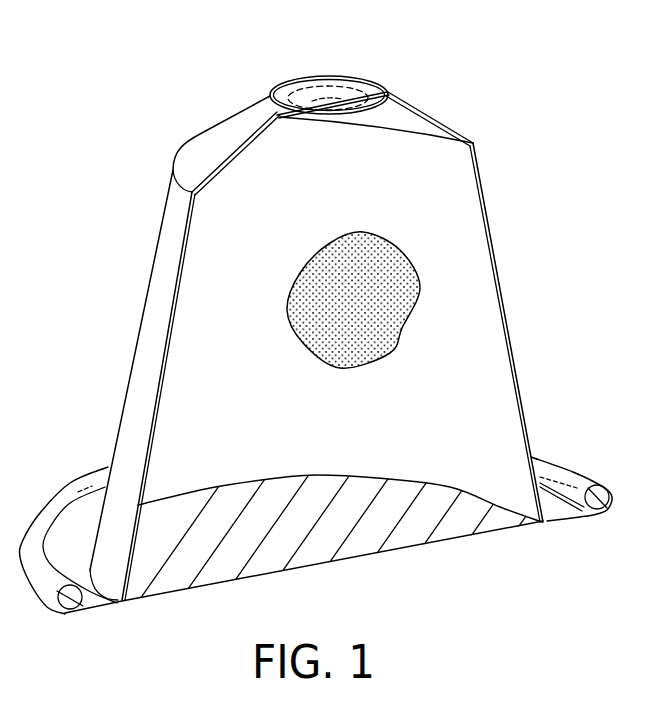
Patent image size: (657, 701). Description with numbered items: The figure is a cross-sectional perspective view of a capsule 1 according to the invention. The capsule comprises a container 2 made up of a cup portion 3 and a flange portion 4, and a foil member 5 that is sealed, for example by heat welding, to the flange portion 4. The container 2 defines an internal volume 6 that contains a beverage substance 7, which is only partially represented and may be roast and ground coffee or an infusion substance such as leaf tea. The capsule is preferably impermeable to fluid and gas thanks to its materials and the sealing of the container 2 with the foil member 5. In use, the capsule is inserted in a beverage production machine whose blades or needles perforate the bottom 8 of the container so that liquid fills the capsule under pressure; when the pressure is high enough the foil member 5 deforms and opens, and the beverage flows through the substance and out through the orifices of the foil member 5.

The capsule 1 is at (445, 32).
The container 2 is at (550, 272).
The cup portion 3 is at (517, 347).
The flange portion 4 is at (569, 519).
The foil member 5 is at (410, 549).
The internal volume 6 is at (508, 395).
The beverage substance 7 is at (287, 310).
The bottom 8 is at (228, 132).